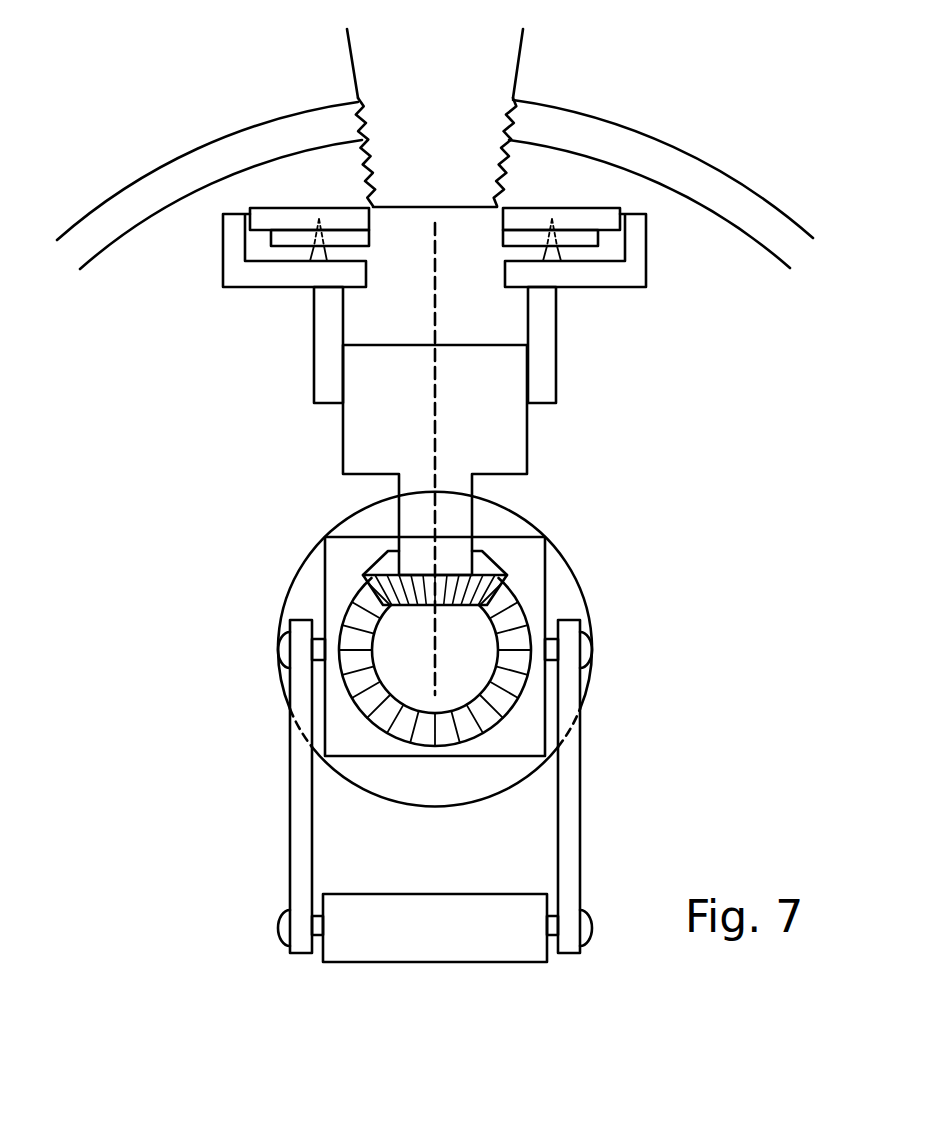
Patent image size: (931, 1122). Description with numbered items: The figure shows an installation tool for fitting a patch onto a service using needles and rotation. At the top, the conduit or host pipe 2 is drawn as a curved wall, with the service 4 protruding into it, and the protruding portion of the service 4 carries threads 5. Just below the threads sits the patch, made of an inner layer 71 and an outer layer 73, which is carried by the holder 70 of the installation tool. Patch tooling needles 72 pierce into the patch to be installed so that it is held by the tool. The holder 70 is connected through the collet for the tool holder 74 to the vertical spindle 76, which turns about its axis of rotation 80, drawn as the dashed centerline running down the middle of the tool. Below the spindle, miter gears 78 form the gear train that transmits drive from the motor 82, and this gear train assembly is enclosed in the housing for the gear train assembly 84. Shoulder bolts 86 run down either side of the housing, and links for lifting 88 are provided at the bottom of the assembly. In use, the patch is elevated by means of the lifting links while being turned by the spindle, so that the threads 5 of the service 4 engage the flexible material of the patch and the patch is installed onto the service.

The conduit or host pipe 2 is at (740, 178).
The service 4 is at (517, 72).
The threads 5 is at (497, 157).
The holder 70 is at (687, 253).
The inner layer 71 is at (580, 238).
The patch tooling needles 72 is at (558, 252).
The outer layer 73 is at (563, 215).
The collet for the tool holder 74 is at (587, 393).
The vertical spindle 76 is at (527, 450).
The miter gears 78 is at (503, 593).
The axis of rotation 80 is at (435, 273).
The motor 82 is at (302, 572).
The housing for the gear train assembly 84 is at (508, 760).
The shoulder bolts 86 is at (582, 673).
The links for lifting 88 is at (292, 880).